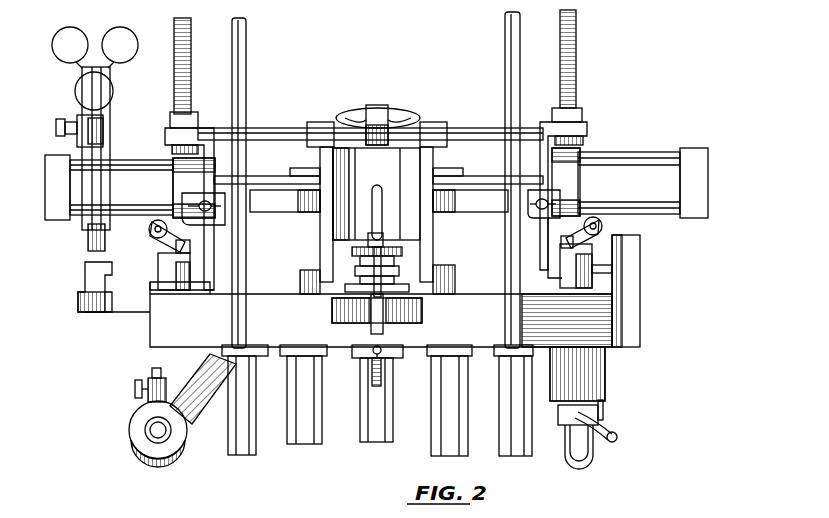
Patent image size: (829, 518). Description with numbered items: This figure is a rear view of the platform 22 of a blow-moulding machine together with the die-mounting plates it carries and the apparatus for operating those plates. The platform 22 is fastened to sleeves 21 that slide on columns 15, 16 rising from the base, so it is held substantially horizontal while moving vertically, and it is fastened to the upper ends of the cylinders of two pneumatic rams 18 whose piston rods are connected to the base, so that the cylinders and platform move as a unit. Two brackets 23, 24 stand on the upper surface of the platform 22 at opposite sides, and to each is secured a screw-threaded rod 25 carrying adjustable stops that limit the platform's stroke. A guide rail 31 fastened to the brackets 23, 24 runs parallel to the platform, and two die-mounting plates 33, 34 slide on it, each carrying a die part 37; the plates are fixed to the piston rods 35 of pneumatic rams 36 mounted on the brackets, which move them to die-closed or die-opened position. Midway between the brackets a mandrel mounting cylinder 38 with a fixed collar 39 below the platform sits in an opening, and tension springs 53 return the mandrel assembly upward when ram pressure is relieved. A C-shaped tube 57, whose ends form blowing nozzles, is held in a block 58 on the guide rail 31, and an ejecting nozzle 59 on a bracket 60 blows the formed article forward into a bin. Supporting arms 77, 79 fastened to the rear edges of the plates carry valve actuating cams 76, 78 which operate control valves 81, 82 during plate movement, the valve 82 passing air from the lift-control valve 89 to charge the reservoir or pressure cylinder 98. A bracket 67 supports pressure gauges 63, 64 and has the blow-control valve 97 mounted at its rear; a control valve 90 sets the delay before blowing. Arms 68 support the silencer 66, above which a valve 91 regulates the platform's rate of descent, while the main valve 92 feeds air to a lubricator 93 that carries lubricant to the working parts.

The column 15 is at (508, 38).
The column 16 is at (240, 62).
The pneumatic ram 18 is at (304, 434).
The sleeve 21 is at (242, 448).
The platform 22 is at (381, 314).
The bracket 23 is at (582, 128).
The bracket 24 is at (170, 132).
The screw-threaded rod 25 is at (190, 84).
The guide rail 31 is at (268, 132).
The die-mounting plate 33 is at (433, 258).
The die-mounting plate 34 is at (322, 248).
The piston rod 35 is at (266, 178).
The pneumatic ram 36 is at (128, 172).
The die part 37 is at (368, 167).
The mandrel mounting cylinder 38 is at (372, 400).
The fixed collar 39 is at (403, 358).
The tension spring 53 is at (372, 385).
The C-shaped tube 57 is at (404, 110).
The block 58 is at (377, 110).
The nozzle 59 is at (382, 218).
The bracket 60 is at (422, 312).
The pressure gauge 63 is at (120, 36).
The pressure gauge 64 is at (70, 36).
The silencer 66 is at (138, 422).
The bracket 67 is at (82, 268).
The arm 68 is at (206, 372).
The valve actuating cam 76 is at (224, 220).
The supporting arm 77 is at (300, 206).
The valve actuating cam 78 is at (534, 220).
The supporting arm 79 is at (486, 206).
The control valve 81 is at (160, 268).
The control valve 82 is at (592, 268).
The valve 89 is at (605, 376).
The control valve 90 is at (70, 122).
The valve 91 is at (134, 389).
The main valve 92 is at (604, 408).
The lubricator 93 is at (596, 460).
The blow-control valve 97 is at (88, 238).
The reservoir or pressure cylinder 98 is at (640, 262).